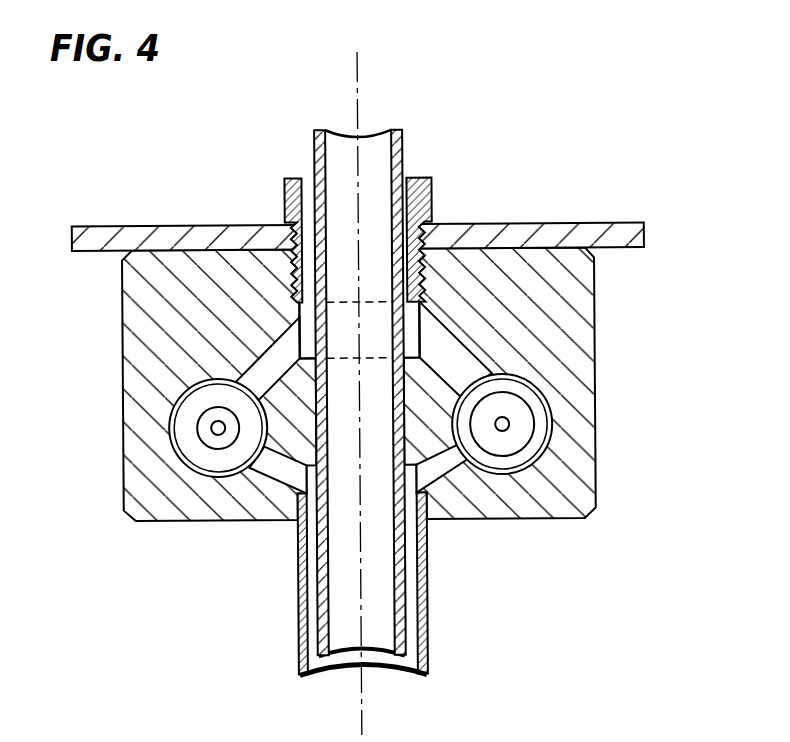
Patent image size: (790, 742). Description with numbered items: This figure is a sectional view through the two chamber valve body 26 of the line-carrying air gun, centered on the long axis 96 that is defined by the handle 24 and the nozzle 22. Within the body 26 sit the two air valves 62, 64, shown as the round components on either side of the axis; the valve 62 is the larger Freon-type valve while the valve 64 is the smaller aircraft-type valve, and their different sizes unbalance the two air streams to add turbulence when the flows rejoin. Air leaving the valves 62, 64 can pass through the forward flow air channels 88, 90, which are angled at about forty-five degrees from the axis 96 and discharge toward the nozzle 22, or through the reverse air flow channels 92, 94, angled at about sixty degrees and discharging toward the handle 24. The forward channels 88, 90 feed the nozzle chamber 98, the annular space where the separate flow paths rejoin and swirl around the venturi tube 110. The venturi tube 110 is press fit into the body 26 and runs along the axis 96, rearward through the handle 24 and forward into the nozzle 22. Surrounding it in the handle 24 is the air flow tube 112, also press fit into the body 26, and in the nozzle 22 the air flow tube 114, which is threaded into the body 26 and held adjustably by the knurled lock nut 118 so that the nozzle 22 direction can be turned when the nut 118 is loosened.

The nozzle 22 is at (472, 165).
The handle 24 is at (440, 655).
The valve body 26 is at (597, 408).
The air valve 62 is at (520, 440).
The air valve 64 is at (197, 430).
The forward flow air channel 88 is at (278, 357).
The forward flow air channel 90 is at (460, 367).
The reverse air flow channel 92 is at (285, 468).
The reverse air flow channel 94 is at (443, 462).
The long axis 96 is at (358, 116).
The nozzle chamber 98 is at (413, 323).
The venturi tube 110 is at (316, 147).
The air flow tube 112 is at (297, 648).
The air flow tube 114 is at (418, 178).
The knurled lock nut 118 is at (605, 223).